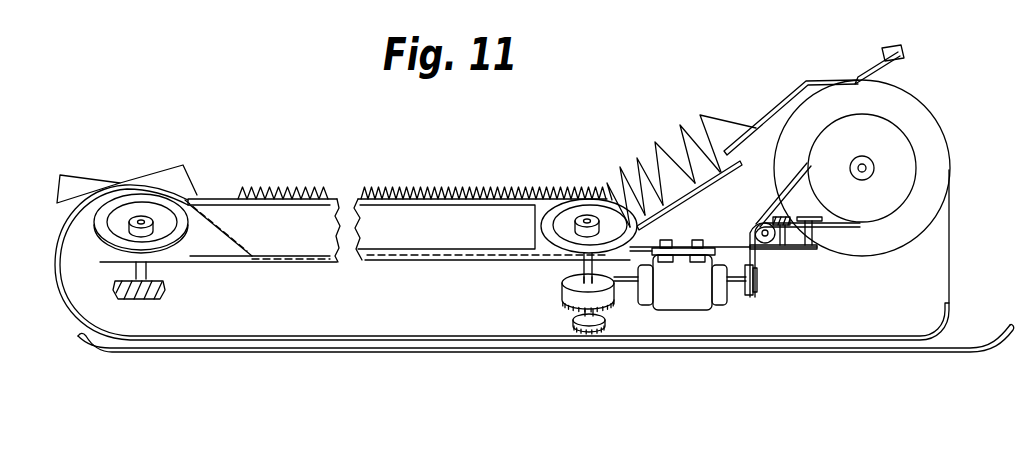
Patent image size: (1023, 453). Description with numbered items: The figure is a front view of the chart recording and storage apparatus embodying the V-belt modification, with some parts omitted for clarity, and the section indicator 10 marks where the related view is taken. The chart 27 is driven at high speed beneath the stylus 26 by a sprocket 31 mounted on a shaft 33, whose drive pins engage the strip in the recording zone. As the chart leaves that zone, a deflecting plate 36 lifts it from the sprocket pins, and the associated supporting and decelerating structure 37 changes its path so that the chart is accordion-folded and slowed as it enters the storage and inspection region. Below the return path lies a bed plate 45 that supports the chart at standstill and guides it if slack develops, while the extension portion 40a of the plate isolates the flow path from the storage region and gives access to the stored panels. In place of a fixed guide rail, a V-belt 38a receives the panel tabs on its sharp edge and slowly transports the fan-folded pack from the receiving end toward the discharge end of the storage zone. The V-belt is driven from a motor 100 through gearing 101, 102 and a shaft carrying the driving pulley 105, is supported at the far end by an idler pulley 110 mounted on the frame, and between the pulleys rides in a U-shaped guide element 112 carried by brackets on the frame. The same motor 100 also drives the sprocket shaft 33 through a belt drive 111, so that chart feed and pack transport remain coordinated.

The section line of FIG. 10 is at (588, 173).
The stylus 26 is at (868, 65).
The chart 27 is at (720, 117).
The sprocket 31 is at (910, 107).
The shaft 33 is at (870, 167).
The deflecting plate 36 is at (757, 137).
The supporting and decelerating structure 37 is at (712, 188).
The V-belt 38a is at (212, 198).
The extension portion of plate 37 40a is at (362, 337).
The bed plate 45 is at (224, 355).
The motor 100 is at (687, 302).
The gearing 101 is at (560, 282).
The gearing 102 is at (603, 327).
The driving pulley 105 is at (598, 209).
The idler pulley 110 is at (118, 208).
The belt drive 111 is at (757, 257).
The U-shaped guide element 112 is at (478, 208).